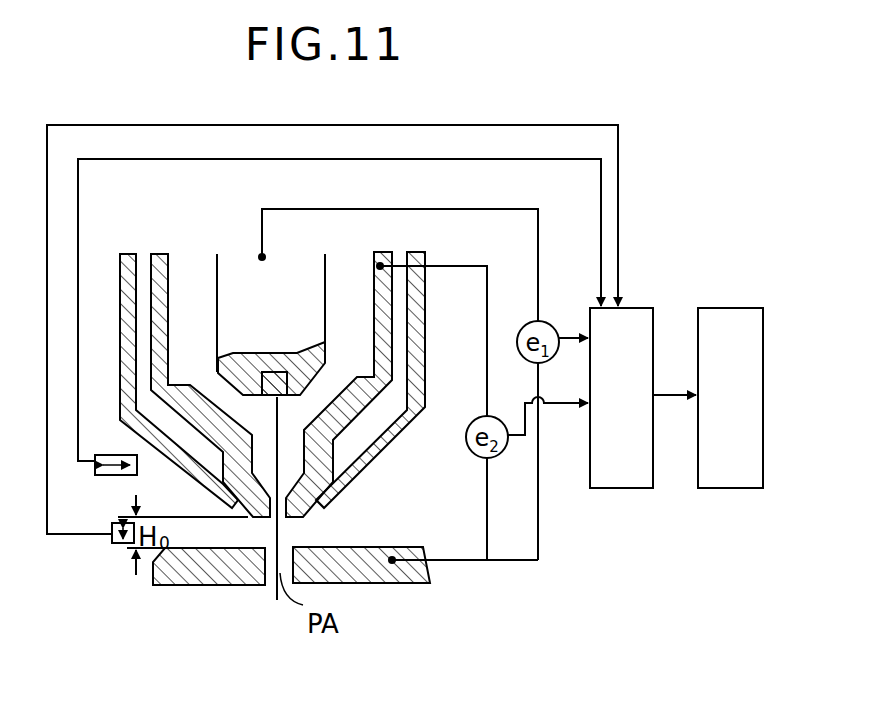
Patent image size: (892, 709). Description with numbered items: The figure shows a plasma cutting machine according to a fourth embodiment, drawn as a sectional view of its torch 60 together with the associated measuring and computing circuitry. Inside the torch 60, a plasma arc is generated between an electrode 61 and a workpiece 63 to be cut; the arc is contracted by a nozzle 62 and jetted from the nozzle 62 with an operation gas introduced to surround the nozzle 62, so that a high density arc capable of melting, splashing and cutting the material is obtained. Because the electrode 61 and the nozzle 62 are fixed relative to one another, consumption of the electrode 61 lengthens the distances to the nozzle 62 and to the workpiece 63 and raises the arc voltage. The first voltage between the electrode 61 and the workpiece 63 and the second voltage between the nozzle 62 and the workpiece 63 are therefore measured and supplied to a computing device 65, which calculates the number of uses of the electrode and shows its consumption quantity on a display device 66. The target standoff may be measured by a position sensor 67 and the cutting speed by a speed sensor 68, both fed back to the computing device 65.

The torch 60 is at (432, 256).
The electrode 61 is at (304, 270).
The nozzle 62 is at (308, 505).
The workpiece 63 is at (182, 577).
The computing device 65 is at (636, 306).
The display device 66 is at (724, 306).
The position sensor 67 is at (111, 546).
The speed sensor 68 is at (111, 477).